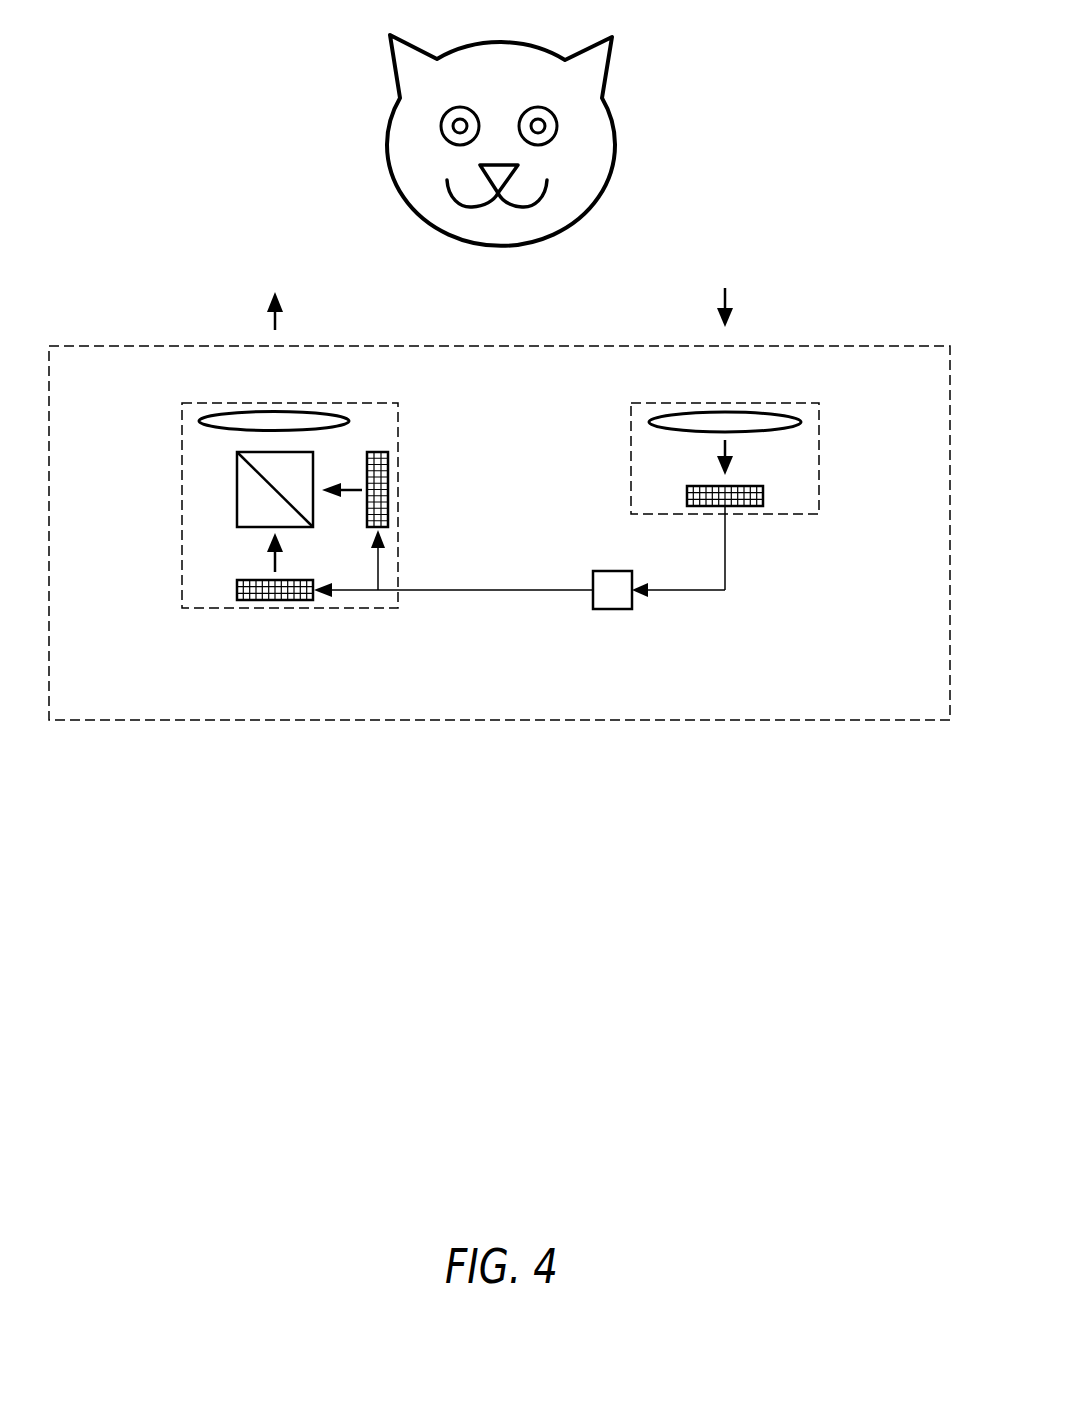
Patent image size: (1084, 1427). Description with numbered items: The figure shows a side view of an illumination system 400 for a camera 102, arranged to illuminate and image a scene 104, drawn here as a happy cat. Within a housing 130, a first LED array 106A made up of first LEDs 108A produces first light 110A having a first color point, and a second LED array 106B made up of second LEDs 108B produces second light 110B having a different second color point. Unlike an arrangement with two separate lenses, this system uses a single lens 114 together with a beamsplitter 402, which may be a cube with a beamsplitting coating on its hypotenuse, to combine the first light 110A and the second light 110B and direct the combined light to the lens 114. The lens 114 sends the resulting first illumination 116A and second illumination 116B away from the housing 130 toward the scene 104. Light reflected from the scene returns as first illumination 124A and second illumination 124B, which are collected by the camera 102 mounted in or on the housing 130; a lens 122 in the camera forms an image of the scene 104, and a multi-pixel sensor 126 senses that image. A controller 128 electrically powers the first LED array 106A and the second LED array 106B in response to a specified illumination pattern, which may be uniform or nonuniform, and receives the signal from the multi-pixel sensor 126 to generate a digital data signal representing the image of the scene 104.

The illumination system 400 is at (203, 207).
The scene 104 is at (387, 142).
The housing 130 is at (63, 345).
The first illumination 116A is at (200, 311).
The second illumination 116B is at (267, 310).
The first illumination reflected from the scene 124A is at (803, 307).
The second illumination reflected from the scene 124B is at (733, 310).
The lens 114 is at (230, 413).
The lens 122 is at (680, 412).
The camera 102 is at (819, 458).
The beamsplitter 402 is at (237, 484).
The first LED array 106A is at (275, 624).
The first LEDs 108A is at (298, 600).
The second LED array 106B is at (425, 486).
The second LEDs 108B is at (388, 462).
The first light 110A is at (267, 547).
The second light 110B is at (337, 495).
The multi-pixel sensor 126 is at (752, 507).
The controller 128 is at (610, 612).